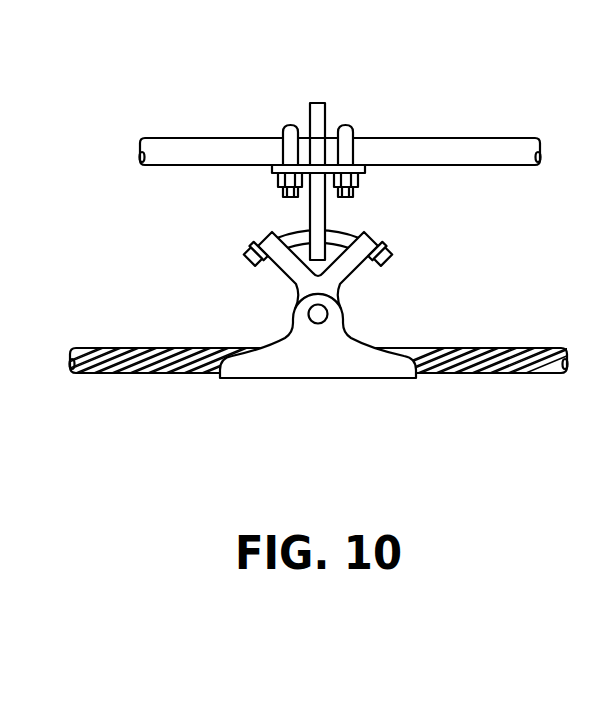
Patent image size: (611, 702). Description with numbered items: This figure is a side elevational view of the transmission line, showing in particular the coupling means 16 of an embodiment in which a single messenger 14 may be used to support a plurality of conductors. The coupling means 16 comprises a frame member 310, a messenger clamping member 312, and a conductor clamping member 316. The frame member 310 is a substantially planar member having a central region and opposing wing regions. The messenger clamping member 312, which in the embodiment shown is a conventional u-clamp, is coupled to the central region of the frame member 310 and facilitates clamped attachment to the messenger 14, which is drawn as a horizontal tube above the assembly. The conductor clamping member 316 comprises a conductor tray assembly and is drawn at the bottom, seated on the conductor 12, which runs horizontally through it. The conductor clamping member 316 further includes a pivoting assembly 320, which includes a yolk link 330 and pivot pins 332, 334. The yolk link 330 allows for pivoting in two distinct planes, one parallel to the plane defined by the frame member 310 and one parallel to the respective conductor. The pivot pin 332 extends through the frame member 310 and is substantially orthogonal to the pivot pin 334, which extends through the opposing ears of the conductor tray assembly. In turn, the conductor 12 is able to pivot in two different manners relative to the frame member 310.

The conductor cable 12 is at (538, 348).
The messenger 14 is at (467, 138).
The coupling means 16 is at (160, 273).
The frame member 310 is at (315, 213).
The messenger clamping member 312 is at (287, 112).
The conductor clamping member 316 is at (316, 358).
The pivoting assembly 320 is at (410, 247).
The yolk link 330 is at (280, 296).
The pivot pin 332 is at (252, 229).
The pivot pin 334 is at (328, 314).